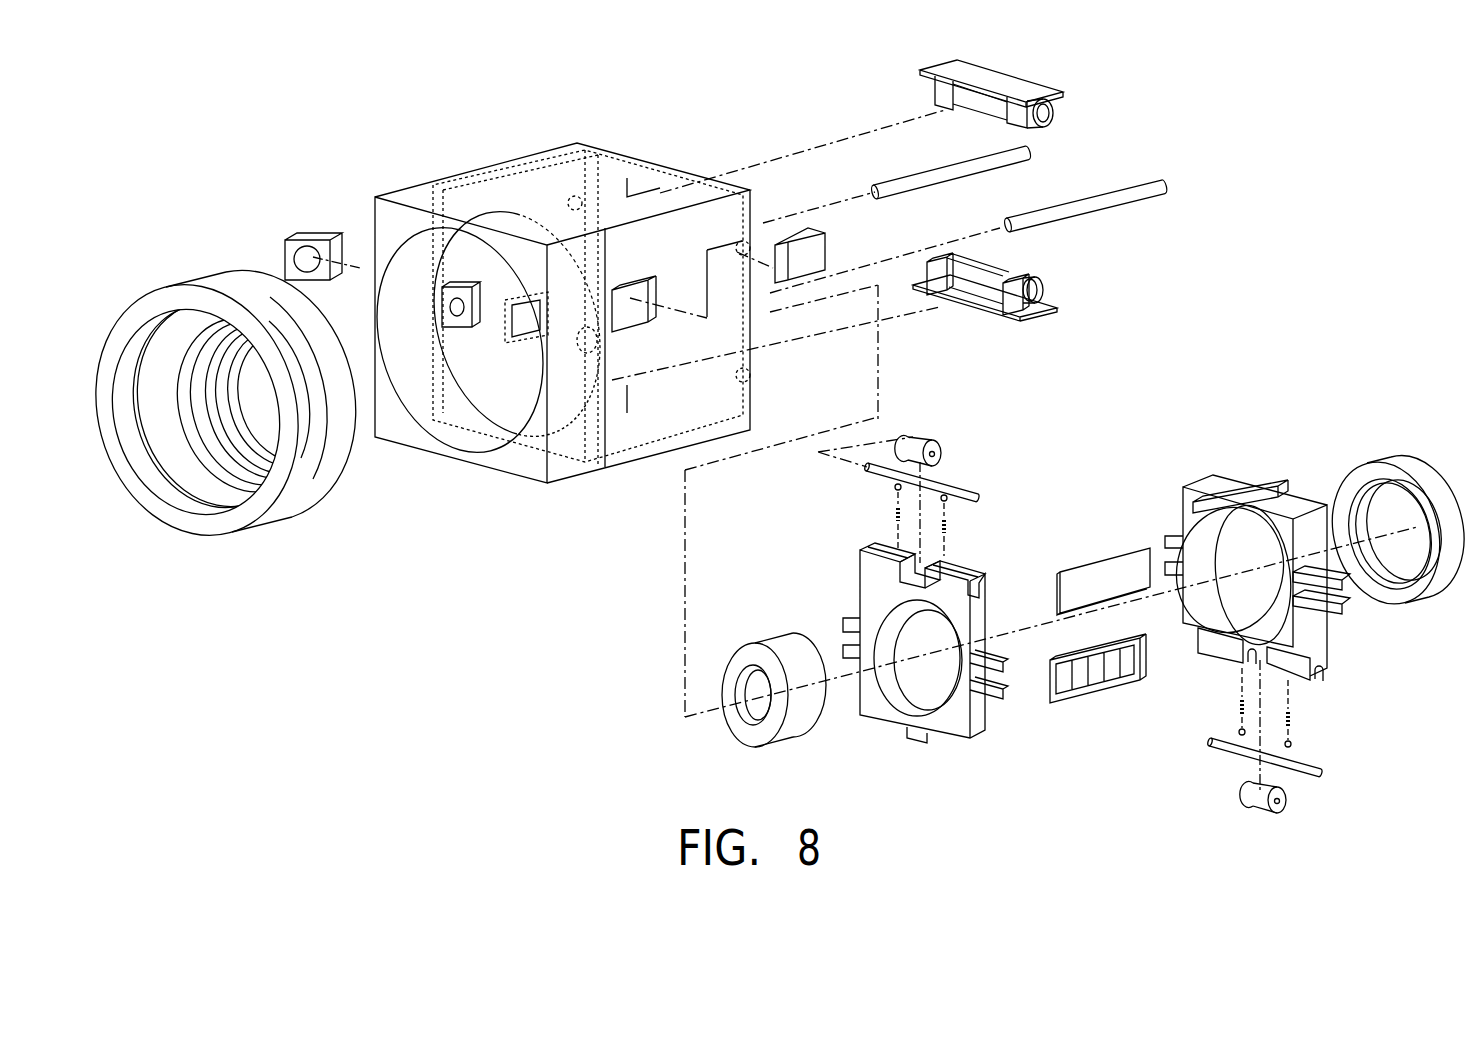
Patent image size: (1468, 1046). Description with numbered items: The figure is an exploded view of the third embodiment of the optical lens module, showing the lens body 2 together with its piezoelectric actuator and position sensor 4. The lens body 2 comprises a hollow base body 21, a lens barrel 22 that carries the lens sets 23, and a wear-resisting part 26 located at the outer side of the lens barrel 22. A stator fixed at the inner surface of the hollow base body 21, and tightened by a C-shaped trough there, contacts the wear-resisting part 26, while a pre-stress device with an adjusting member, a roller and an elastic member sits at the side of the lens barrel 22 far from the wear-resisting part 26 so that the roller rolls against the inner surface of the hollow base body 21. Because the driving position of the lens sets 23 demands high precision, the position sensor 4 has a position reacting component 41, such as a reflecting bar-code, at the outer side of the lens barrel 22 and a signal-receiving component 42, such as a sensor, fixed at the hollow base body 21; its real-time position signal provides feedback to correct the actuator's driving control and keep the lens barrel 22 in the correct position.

The lens body 2 is at (484, 632).
The hollow base body 21 is at (567, 470).
The lens barrel 22 is at (883, 713).
The lens set 23 is at (743, 724).
The wear-resisting part 26 is at (1258, 483).
The position sensor 4 is at (1315, 195).
The position reacting component 41 is at (1090, 667).
The signal-receiving component 42 is at (807, 252).